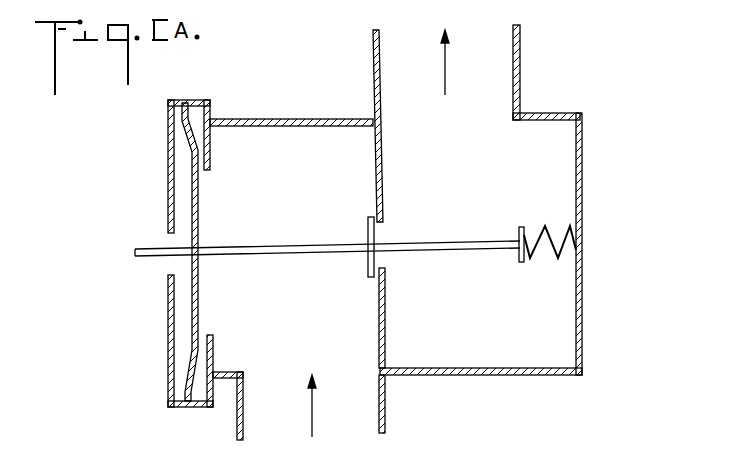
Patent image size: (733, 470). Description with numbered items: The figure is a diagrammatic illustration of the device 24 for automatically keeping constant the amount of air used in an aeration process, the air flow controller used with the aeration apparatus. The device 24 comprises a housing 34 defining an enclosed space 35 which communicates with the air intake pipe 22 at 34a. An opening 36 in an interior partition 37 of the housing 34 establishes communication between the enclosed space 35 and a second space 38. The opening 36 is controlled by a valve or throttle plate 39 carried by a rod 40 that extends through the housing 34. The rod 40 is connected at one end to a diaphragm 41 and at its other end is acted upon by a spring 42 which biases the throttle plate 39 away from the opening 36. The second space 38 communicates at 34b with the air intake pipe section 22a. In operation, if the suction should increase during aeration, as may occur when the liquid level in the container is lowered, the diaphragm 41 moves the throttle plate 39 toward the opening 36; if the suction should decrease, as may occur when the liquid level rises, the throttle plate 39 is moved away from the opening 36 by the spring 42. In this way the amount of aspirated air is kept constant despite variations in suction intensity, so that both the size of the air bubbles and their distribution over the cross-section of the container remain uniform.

The air intake pipe 22 is at (521, 62).
The air intake pipe section 22a is at (386, 418).
The device for automatically keeping constant the amount of air 24 is at (586, 159).
The housing 34 is at (583, 322).
The communication point with air intake pipe 34a is at (512, 116).
The communication point with air intake pipe section 34b is at (243, 372).
The enclosed space 35 is at (484, 189).
The opening 36 is at (381, 223).
The interior partition 37 is at (386, 322).
The second space 38 is at (299, 193).
The throttle plate 39 is at (369, 278).
The rod 40 is at (274, 255).
The diaphragm 41 is at (192, 361).
The spring 42 is at (541, 262).